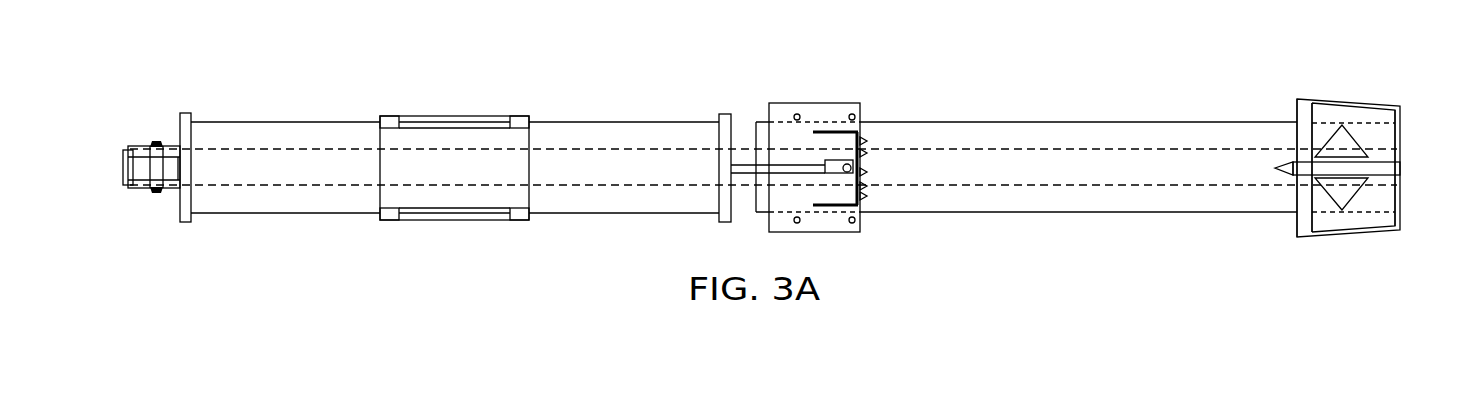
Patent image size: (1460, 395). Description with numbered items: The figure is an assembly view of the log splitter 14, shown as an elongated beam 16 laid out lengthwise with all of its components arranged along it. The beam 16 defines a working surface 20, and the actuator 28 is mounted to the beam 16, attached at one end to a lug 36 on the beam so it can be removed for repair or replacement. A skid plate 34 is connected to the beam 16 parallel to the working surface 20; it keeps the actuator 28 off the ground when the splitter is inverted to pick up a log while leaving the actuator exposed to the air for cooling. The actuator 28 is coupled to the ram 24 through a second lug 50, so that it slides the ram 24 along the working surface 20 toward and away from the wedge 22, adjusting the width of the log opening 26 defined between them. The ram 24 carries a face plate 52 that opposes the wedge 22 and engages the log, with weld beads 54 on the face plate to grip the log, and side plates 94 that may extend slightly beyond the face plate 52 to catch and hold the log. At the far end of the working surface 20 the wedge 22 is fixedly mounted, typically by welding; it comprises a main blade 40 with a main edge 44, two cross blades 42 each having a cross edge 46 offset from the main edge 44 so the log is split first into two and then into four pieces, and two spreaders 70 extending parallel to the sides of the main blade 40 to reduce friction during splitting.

The log splitter 14 is at (533, 251).
The beam 16 is at (262, 150).
The working surface 20 is at (993, 202).
The wedge 22 is at (1334, 143).
The ram 24 is at (841, 152).
The log opening 26 is at (1026, 153).
The actuator 28 is at (607, 135).
The skid plate 34 is at (461, 135).
The lug 36 is at (125, 167).
The main blade 40 is at (1390, 167).
The cross blade 42 is at (1367, 115).
The main edge 44 is at (1275, 168).
The cross edge 46 is at (1297, 133).
The lug 50 is at (846, 174).
The face plate 52 is at (864, 193).
The weld beads 54 is at (864, 153).
The spreader 70 is at (1360, 140).
The side plates 94 is at (832, 128).